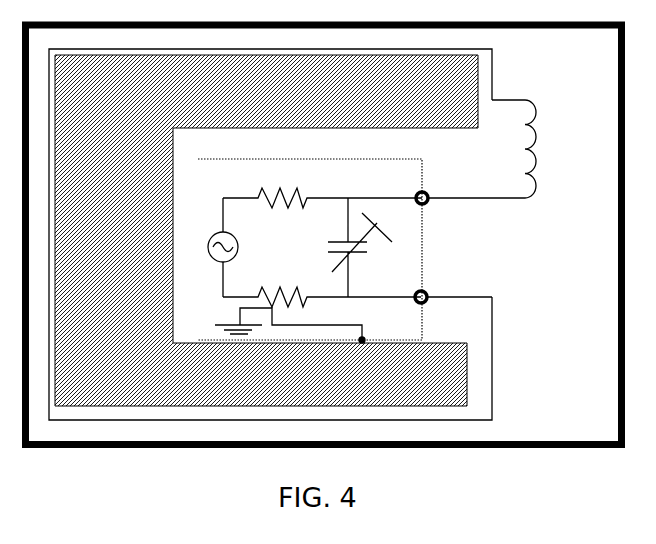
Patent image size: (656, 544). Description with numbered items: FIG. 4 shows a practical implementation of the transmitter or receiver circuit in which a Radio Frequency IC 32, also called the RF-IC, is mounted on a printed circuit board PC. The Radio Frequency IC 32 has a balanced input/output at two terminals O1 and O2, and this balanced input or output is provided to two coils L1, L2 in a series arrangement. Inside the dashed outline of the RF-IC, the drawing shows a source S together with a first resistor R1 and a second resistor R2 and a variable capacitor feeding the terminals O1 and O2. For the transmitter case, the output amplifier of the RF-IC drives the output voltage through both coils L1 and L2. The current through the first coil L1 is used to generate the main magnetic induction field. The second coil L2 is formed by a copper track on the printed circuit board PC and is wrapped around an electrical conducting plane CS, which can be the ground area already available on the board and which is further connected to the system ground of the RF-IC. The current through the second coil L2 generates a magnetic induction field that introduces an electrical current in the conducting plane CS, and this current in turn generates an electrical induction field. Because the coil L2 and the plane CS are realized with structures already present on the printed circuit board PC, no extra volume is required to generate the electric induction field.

The radio frequency IC 32 is at (383, 157).
The printed circuit board PC is at (324, 235).
The second coil L2 is at (270, 226).
The electrical conducting plane CS is at (266, 230).
The first coil L1 is at (499, 149).
The element RF-IC is at (338, 239).
The resistor R1 is at (285, 177).
The resistor R2 is at (285, 286).
The source S is at (211, 247).
The terminal O1 is at (438, 191).
The terminal O2 is at (453, 290).